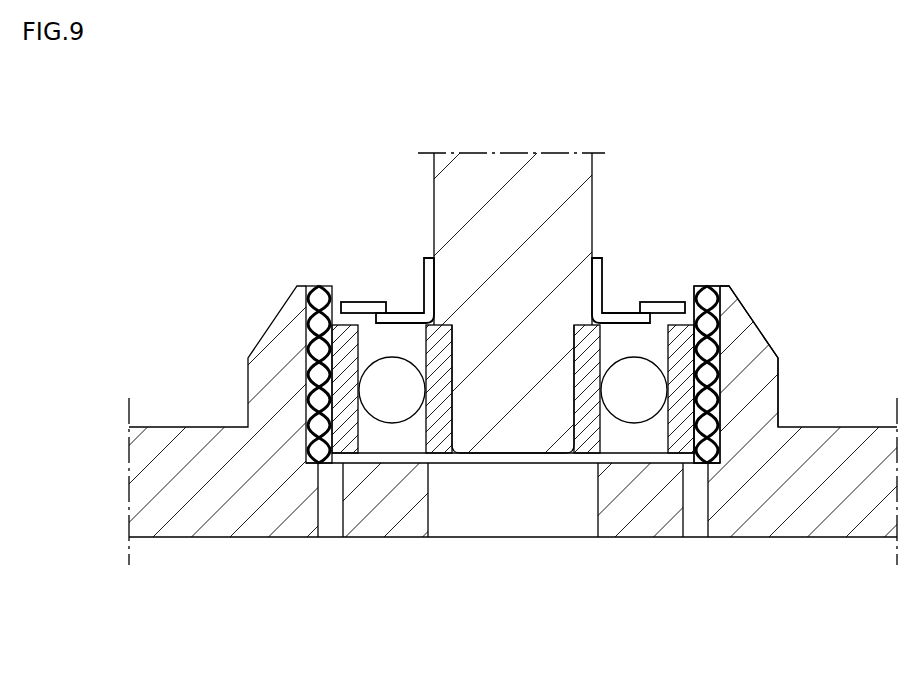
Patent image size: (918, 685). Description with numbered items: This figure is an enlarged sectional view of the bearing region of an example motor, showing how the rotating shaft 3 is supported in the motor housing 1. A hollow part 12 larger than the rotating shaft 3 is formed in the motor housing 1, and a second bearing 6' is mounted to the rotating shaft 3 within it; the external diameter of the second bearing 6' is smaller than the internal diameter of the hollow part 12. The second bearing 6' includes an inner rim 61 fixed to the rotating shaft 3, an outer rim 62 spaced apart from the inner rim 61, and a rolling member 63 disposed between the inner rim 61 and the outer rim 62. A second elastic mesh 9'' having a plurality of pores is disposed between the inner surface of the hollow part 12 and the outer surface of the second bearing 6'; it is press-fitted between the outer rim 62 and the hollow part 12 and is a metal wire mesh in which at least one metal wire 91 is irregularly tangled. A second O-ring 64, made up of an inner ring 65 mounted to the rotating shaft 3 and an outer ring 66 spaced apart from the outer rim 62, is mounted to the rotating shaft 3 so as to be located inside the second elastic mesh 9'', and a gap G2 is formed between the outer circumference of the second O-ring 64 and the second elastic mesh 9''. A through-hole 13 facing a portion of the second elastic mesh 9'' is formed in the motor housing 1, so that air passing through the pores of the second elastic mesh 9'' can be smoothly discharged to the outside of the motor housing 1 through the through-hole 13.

The motor housing 1 is at (208, 528).
The rotating shaft 3 is at (515, 176).
The hollow part 12 is at (743, 343).
The through-hole 13 is at (331, 528).
The second bearing 6' is at (459, 342).
The inner rim 61 is at (590, 440).
The outer rim 62 is at (680, 440).
The rolling member 63 is at (635, 410).
The second O-ring 64 is at (527, 224).
The inner ring 65 is at (623, 320).
The outer ring 66 is at (665, 306).
The second elastic mesh 9'' is at (729, 320).
The gap G2 is at (713, 307).
The metal wire 91 is at (713, 323).